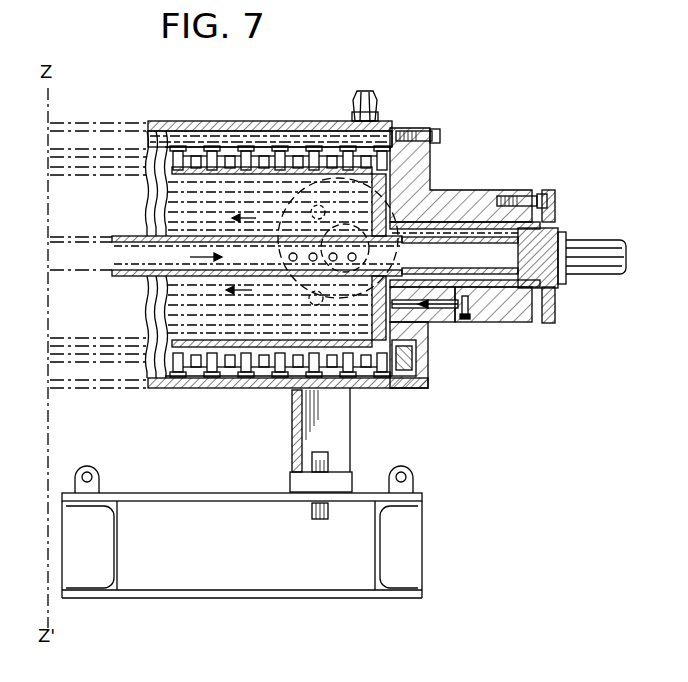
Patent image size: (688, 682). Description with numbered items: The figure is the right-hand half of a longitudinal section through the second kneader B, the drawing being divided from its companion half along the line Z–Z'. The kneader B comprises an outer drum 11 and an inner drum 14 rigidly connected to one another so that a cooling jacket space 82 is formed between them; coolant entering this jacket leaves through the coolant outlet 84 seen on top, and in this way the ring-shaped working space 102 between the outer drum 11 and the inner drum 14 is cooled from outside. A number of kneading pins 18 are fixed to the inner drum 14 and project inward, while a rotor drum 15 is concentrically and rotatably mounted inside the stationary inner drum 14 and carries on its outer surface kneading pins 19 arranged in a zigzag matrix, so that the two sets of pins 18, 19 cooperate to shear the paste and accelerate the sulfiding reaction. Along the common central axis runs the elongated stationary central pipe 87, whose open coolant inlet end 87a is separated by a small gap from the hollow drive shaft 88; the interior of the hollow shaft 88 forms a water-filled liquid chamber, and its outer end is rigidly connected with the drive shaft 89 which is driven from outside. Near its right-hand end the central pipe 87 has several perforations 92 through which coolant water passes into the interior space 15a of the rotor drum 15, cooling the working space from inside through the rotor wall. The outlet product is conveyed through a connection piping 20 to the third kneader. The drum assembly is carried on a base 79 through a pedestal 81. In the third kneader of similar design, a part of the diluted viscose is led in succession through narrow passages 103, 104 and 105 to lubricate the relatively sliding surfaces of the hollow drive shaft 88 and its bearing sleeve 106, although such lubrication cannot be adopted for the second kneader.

The second kneader B is at (157, 117).
The outer drum 11 is at (170, 122).
The inner drum 14 is at (228, 155).
The rotor drum 15 is at (205, 175).
The interior space of rotor drum 15a is at (180, 293).
The kneading pins 18 is at (212, 347).
The kneading pins 19 is at (262, 347).
The connection piping 20 is at (338, 241).
The base 79 is at (202, 530).
The pedestal 81 is at (292, 432).
The cooling jacket space 82 is at (290, 137).
The coolant outlet 84 is at (366, 96).
The central pipe 87 is at (127, 236).
The coolant inlet end 87a is at (410, 278).
The hollow drive shaft 88 is at (465, 207).
The drive shaft 89 is at (556, 286).
The perforations 92 is at (293, 263).
The ring-shaped working space 102 is at (360, 382).
The narrow passage 103 is at (395, 352).
The narrow passage 104 is at (428, 317).
The narrow passage 105 is at (466, 314).
The bearing sleeve 106 is at (517, 190).